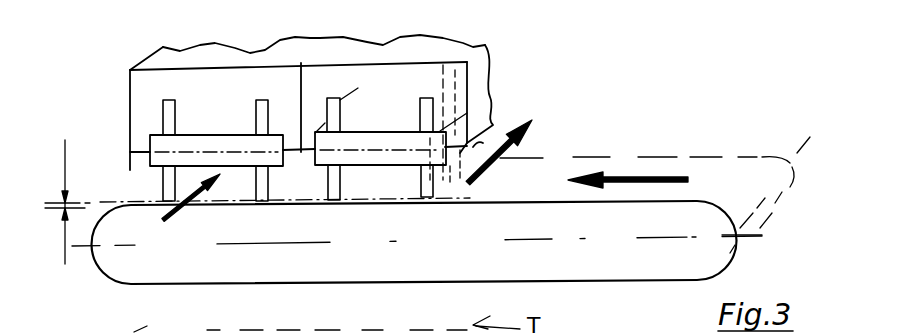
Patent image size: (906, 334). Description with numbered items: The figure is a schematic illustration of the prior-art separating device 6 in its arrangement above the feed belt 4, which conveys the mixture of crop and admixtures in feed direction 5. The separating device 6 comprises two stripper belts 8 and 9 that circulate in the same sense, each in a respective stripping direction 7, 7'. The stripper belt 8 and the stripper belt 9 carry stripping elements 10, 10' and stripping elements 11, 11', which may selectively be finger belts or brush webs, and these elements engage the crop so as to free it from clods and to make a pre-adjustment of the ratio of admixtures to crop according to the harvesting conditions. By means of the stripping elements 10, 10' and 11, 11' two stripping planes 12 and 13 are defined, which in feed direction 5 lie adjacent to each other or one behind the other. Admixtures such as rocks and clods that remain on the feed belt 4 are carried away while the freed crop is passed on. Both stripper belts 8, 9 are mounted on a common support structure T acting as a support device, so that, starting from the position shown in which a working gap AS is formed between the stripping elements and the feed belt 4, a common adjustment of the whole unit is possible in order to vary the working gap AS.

The feed belt 4 is at (755, 181).
The feed direction 5 is at (637, 177).
The separating device 6 is at (497, 70).
The stripping direction 7 is at (555, 144).
The stripping direction 7' is at (184, 228).
The stripper belt 8 is at (370, 126).
The stripper belt 9 is at (194, 131).
The stripping element 10 is at (397, 180).
The stripping element 10' is at (241, 188).
The stripping element 11 is at (269, 224).
The stripping element 11' is at (140, 222).
The stripping plane 12 is at (390, 193).
The stripping plane 13 is at (214, 204).
The common support structure T is at (300, 92).
The working gap AS is at (65, 156).